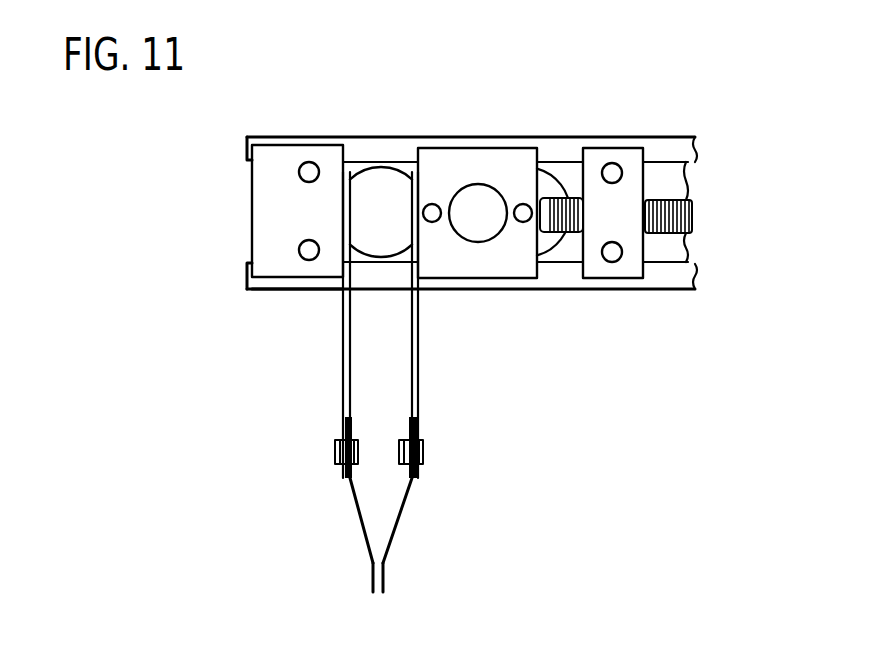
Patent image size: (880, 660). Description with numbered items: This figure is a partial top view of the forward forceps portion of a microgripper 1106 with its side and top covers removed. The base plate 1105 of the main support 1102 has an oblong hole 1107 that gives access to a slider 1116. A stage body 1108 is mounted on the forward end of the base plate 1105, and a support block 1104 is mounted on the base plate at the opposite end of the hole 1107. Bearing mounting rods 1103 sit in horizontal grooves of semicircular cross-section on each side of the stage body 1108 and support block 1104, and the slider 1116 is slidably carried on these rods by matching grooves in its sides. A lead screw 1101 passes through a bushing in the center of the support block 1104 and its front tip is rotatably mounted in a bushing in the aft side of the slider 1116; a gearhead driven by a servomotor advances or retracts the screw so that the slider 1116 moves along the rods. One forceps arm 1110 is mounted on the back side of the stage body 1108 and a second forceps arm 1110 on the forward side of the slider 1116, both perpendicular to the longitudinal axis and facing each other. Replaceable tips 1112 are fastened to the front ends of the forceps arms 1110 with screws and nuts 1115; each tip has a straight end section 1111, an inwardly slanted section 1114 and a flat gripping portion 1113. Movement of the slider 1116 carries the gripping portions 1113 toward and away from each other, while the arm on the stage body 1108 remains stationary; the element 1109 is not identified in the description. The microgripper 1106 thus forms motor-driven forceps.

The lead screw 1101 is at (692, 224).
The main support 1102 is at (694, 183).
The bearing mounting rods 1103 is at (677, 137).
The support block 1104 is at (603, 150).
The base plate 1105 is at (567, 170).
The microgripper 1106 is at (411, 108).
The oblong hole 1107 is at (383, 198).
The stage body 1108 is at (264, 217).
The frame base 1109 is at (277, 290).
The forceps arms 1110 is at (336, 377).
The straight end sections 1111 is at (356, 449).
The replaceable tips 1112 is at (352, 522).
The gripping portions 1113 is at (371, 582).
The inwardly slanted sections 1114 is at (404, 490).
The nuts 1115 is at (425, 453).
The slider 1116 is at (507, 267).